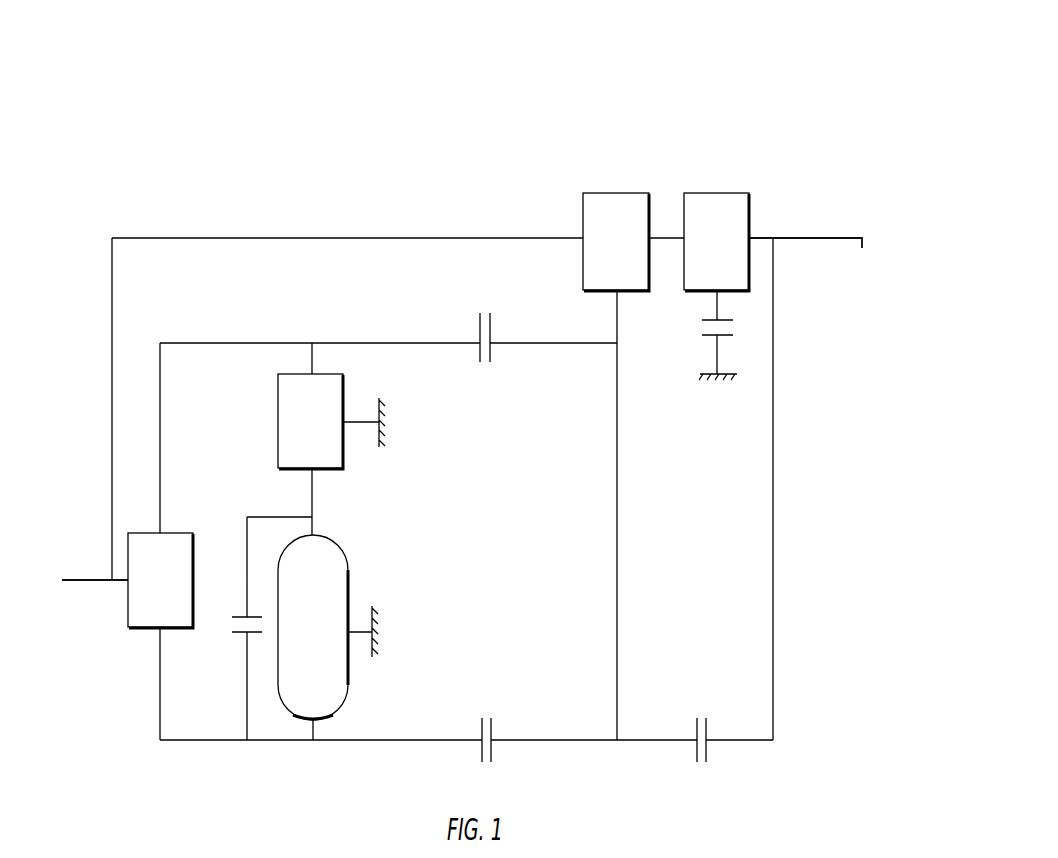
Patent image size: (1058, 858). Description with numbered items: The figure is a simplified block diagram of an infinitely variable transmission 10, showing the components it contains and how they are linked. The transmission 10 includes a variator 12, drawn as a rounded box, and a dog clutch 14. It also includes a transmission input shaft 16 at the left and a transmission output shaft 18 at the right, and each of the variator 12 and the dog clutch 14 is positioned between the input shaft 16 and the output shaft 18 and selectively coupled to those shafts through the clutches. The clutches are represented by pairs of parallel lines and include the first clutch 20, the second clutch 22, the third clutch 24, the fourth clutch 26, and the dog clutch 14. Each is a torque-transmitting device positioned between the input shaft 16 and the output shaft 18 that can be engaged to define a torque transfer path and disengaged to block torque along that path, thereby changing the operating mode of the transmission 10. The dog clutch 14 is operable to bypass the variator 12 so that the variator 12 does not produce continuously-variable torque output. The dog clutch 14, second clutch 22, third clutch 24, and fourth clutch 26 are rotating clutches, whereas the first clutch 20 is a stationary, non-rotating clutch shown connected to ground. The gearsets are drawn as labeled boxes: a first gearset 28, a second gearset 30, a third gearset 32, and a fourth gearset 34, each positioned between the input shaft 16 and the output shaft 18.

The transmission 10 is at (733, 84).
The variator 12 is at (348, 562).
The dog clutch 14 is at (232, 633).
The transmission input shaft 16 is at (85, 583).
The transmission output shaft 18 is at (808, 238).
The first clutch 20 is at (721, 337).
The second clutch 22 is at (706, 742).
The third clutch 24 is at (490, 343).
The fourth clutch 26 is at (491, 742).
The first gearset 28 is at (623, 193).
The second gearset 30 is at (178, 533).
The third gearset 32 is at (731, 193).
The fourth gearset 34 is at (343, 388).